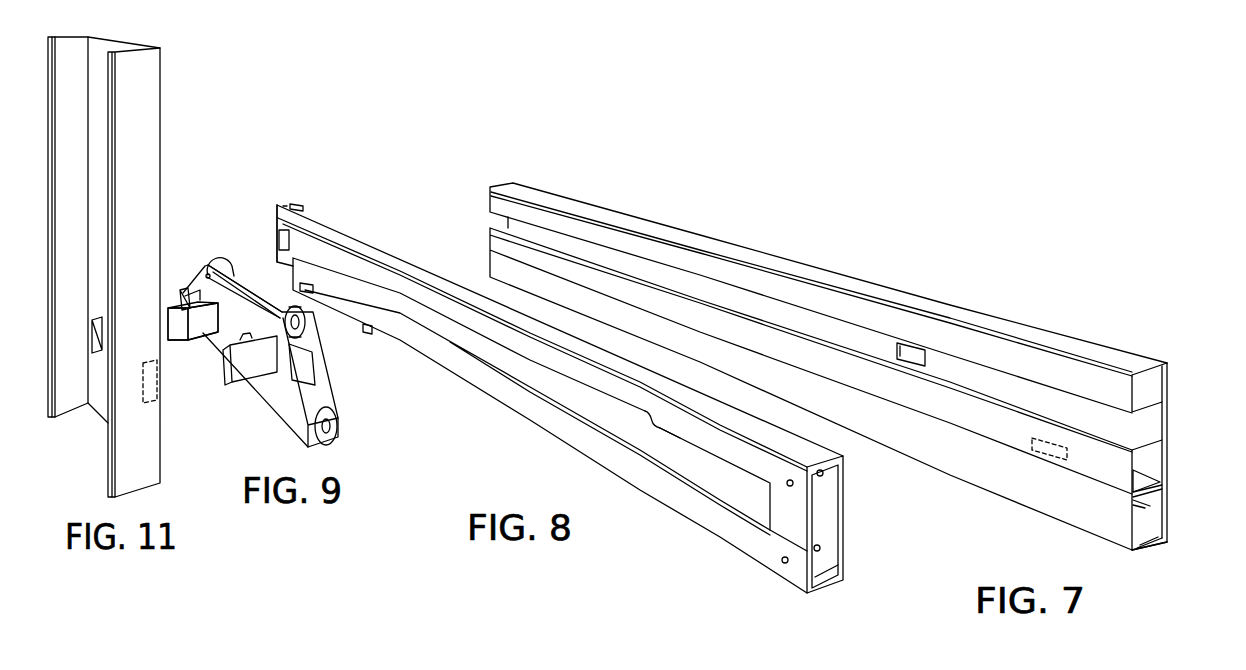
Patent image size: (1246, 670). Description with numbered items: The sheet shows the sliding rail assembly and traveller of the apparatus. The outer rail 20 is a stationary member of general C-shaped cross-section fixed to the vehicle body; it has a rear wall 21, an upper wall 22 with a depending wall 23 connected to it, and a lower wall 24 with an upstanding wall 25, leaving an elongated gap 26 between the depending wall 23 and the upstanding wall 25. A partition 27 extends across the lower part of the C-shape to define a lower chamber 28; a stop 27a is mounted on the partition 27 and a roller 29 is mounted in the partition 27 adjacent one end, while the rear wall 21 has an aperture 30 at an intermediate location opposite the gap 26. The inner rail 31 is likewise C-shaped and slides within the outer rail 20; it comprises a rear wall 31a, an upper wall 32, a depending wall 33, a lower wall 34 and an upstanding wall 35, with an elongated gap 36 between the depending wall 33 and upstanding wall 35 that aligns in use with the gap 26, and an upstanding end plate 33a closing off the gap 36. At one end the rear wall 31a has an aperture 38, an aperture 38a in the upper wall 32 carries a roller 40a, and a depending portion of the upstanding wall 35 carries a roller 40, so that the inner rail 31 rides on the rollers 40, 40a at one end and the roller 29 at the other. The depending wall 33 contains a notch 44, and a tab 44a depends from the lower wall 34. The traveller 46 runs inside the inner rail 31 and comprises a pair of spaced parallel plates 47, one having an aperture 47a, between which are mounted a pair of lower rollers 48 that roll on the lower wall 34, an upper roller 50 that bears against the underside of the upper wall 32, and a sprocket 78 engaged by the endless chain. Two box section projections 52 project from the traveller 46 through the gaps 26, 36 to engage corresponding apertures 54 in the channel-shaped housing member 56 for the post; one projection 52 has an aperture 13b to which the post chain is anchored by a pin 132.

In FIG. 7, the outer rail 20 is at (910, 297).
In FIG. 7, the rear wall 21 is at (1152, 430).
In FIG. 7, the upper wall 22 is at (852, 293).
In FIG. 7, the depending wall 23 is at (733, 272).
In FIG. 7, the lower wall 24 is at (1155, 540).
In FIG. 7, the upstanding wall 25 is at (1012, 488).
In FIG. 7, the elongated gap 26 is at (521, 228).
In FIG. 7, the partition 27 is at (1157, 487).
In FIG. 7, the stop 27a is at (1050, 453).
In FIG. 7, the lower chamber 28 is at (1153, 508).
In FIG. 7, the roller 29 is at (1137, 477).
In FIG. 7, the aperture 30 is at (910, 362).
In FIG. 8, the inner rail 31 is at (432, 264).
In FIG. 8, the rear wall 31a is at (833, 504).
In FIG. 8, the upper wall 32 is at (405, 257).
In FIG. 8, the depending wall 33 is at (380, 270).
In FIG. 8, the end plate 33a is at (795, 522).
In FIG. 8, the lower wall 34 is at (820, 575).
In FIG. 8, the upstanding wall 35 is at (660, 493).
In FIG. 8, the elongated gap 36 is at (493, 357).
In FIG. 8, the aperture 38 is at (283, 230).
In FIG. 8, the aperture 38a is at (282, 214).
In FIG. 8, the roller 40 is at (310, 294).
In FIG. 8, the roller 40a is at (302, 207).
In FIG. 8, the notch 44 is at (632, 412).
In FIG. 8, the tab 44a is at (370, 336).
In FIG. 9, the traveller 46 is at (270, 414).
In FIG. 9, the plates 47 is at (240, 280).
In FIG. 9, the aperture 47a is at (188, 296).
In FIG. 9, the lower rollers 48 is at (327, 427).
In FIG. 9, the upper roller 50 is at (223, 265).
In FIG. 9, the box section projections 52 is at (200, 332).
In FIG. 11, the apertures 54 is at (98, 322).
In FIG. 11, the housing member 56 is at (102, 421).
In FIG. 9, the sprocket 78 is at (302, 327).
In FIG. 9, the pin 132 is at (183, 292).
In FIG. 9, the aperture 13b is at (188, 306).